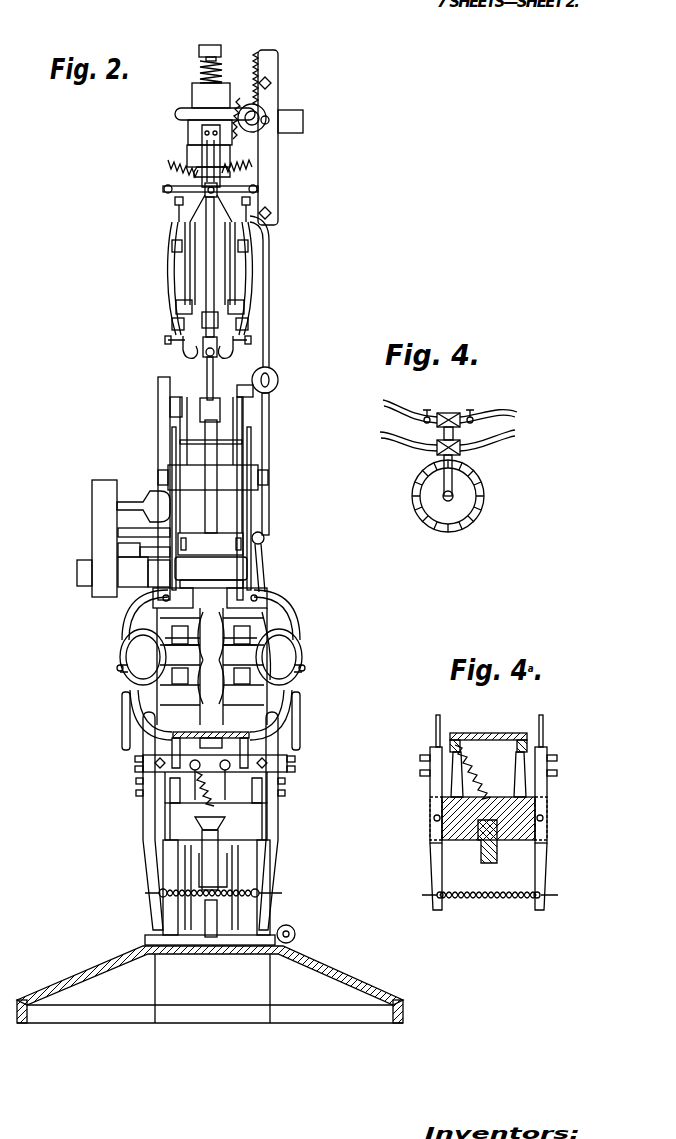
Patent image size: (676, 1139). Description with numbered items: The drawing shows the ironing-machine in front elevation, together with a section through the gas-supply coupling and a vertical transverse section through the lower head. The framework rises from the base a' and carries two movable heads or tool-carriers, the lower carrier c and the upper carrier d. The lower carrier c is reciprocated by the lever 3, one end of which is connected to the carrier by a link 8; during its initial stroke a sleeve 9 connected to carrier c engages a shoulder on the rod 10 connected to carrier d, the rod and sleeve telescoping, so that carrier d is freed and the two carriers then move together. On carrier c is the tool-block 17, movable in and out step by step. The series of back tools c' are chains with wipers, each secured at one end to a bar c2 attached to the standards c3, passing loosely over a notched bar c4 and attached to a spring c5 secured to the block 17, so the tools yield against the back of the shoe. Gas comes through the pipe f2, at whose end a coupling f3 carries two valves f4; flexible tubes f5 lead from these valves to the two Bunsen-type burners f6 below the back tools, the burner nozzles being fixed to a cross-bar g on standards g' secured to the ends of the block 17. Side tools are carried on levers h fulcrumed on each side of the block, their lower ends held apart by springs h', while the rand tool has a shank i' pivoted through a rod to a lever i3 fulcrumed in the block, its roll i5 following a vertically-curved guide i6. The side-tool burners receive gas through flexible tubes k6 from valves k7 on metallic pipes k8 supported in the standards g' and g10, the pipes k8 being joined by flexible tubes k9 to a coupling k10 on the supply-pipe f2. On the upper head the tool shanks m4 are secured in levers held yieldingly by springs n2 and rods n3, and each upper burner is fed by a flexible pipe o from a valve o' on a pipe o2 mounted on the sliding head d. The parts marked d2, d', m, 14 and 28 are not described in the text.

In FIG. 2, the upper head or carrier d is at (203, 111).
In FIG. 2, the spring d2 is at (199, 72).
In FIG. 2, the lever d' is at (184, 161).
In FIG. 2, the spring n2 is at (168, 166).
In FIG. 2, the rod n3 is at (182, 168).
In FIG. 2, the pipe o2 is at (164, 190).
In FIG. 2, the valve o' is at (211, 208).
In FIG. 2, the flexible pipe o is at (206, 278).
In FIG. 2, the shank m4 is at (214, 285).
In FIG. 2, the hook m is at (184, 352).
In FIG. 2, the rod 10 is at (214, 372).
In FIG. 2, the rod 14 is at (270, 408).
In FIG. 2, the vertically-curved guide i6 is at (173, 432).
In FIG. 2, the sleeve 9 is at (212, 507).
In FIG. 2, the roll i5 is at (252, 592).
In FIG. 2, the flexible tube or conduit k6 is at (138, 620).
In FIG. 2, the standard g10 is at (122, 656).
In FIG. 2, the shank i' is at (304, 646).
In FIG. 2, the valve k7 is at (128, 690).
In FIG. 2, the metallic pipe k8 is at (118, 668).
In FIG. 2, the flexible tube k9 is at (120, 722).
In FIG. 4, the flexible tube k9 is at (400, 440).
In FIG. 2, the bar c2 is at (251, 735).
In FIG. 4A, the bar c2 is at (540, 736).
In FIG. 2, the notched bar c4 is at (172, 742).
In FIG. 4A, the notched bar c4 is at (450, 737).
In FIG. 2, the back tools c' is at (257, 756).
In FIG. 4A, the back tools c' is at (488, 754).
In FIG. 2, the lever i3 is at (146, 761).
In FIG. 2, the burner f6 is at (135, 768).
In FIG. 2, the spring c5 is at (196, 775).
In FIG. 4A, the spring c5 is at (470, 775).
In FIG. 2, the cross-bar g is at (248, 788).
In FIG. 2, the standard g' is at (218, 821).
In FIG. 2, the flexible tube or conduit f5 is at (192, 806).
In FIG. 4, the flexible tube or conduit f5 is at (383, 402).
In FIG. 2, the tool-block 17 is at (240, 824).
In FIG. 4A, the tool-block 17 is at (460, 822).
In FIG. 2, the lever h is at (208, 887).
In FIG. 4A, the lever h is at (502, 876).
In FIG. 2, the spring h' is at (224, 899).
In FIG. 4A, the spring h' is at (490, 909).
In FIG. 2, the link 8 is at (215, 908).
In FIG. 2, the lever 3 is at (208, 946).
In FIG. 2, the roller 28 is at (296, 932).
In FIG. 2, the base a' is at (210, 984).
In FIG. 4, the pipe f2 is at (455, 496).
In FIG. 4, the coupling f3 is at (442, 412).
In FIG. 4, the coupling k10 is at (458, 449).
In FIG. 4, the valve f4 is at (427, 410).
In FIG. 4A, the standard c3 is at (525, 786).
In FIG. 4A, the lower head or carrier c is at (495, 842).